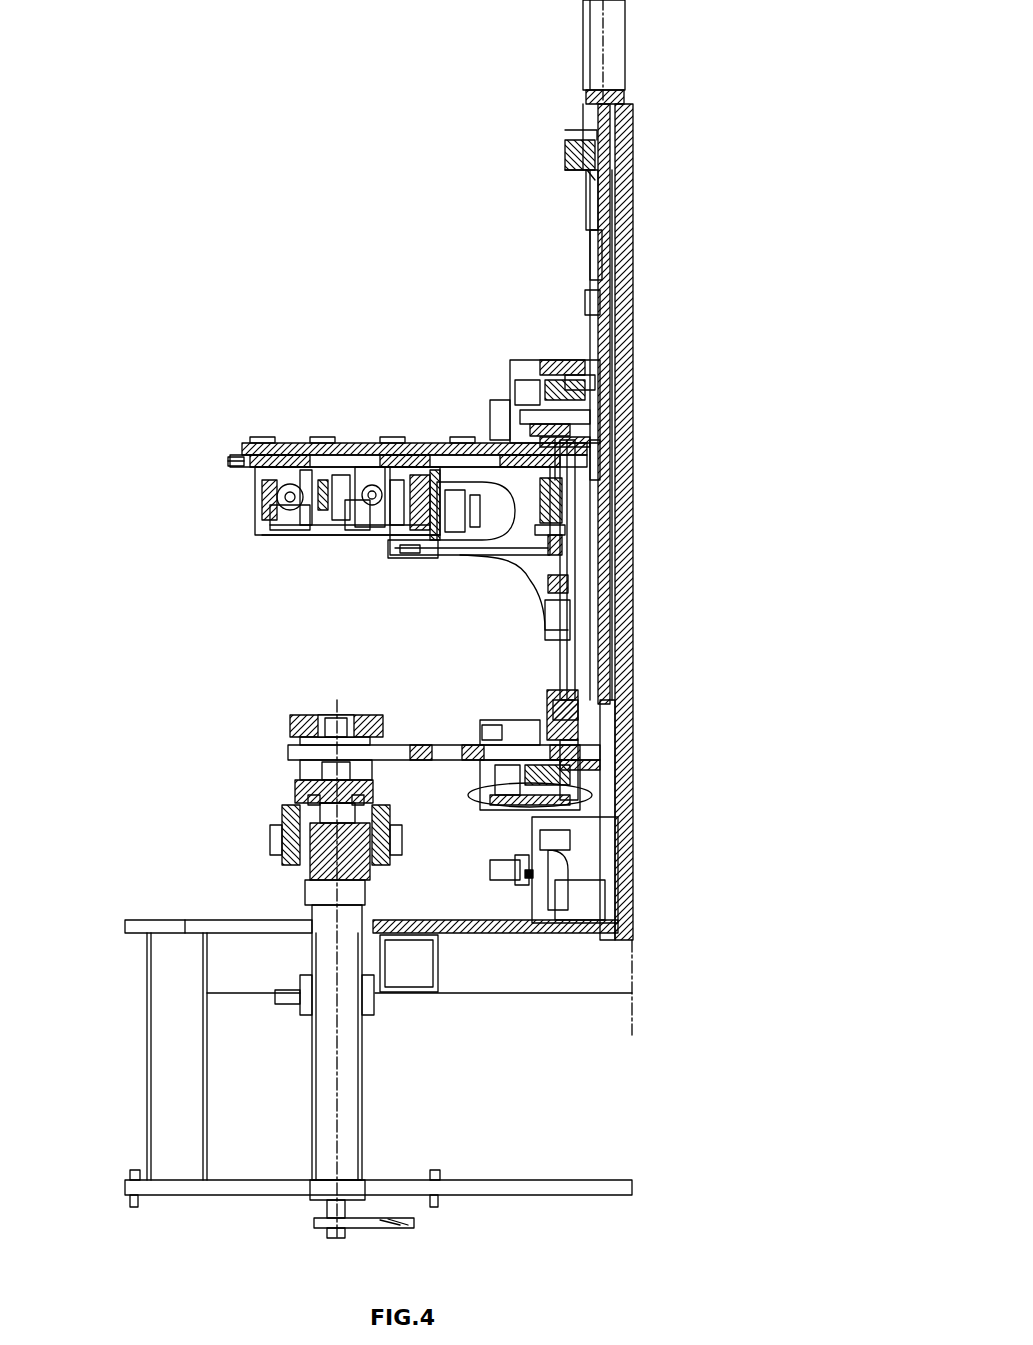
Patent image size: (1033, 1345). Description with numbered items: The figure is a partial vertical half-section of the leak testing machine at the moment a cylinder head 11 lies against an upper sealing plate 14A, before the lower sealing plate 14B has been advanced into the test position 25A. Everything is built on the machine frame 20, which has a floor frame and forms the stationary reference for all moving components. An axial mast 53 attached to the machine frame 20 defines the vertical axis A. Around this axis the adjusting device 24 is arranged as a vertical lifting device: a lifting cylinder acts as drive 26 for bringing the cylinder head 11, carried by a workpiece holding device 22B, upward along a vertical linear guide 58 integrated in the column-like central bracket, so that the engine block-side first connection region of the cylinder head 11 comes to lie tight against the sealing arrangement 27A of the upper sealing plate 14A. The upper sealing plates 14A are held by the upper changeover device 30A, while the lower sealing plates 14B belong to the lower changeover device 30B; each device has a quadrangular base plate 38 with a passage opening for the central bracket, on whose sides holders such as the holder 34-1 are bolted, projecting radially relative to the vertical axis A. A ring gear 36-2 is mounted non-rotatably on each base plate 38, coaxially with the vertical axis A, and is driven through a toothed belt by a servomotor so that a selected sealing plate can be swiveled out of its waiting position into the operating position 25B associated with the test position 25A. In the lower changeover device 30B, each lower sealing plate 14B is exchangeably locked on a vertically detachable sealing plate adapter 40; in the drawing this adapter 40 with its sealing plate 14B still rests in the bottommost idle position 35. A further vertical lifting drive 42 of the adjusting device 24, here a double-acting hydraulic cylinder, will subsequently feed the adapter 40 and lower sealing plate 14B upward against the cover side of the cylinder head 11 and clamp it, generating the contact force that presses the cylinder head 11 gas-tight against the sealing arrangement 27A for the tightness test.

The cylinder head 11 is at (262, 520).
The upper sealing plate 14A is at (228, 462).
The lower sealing plate 14B is at (292, 718).
The machine frame 20 is at (160, 1003).
The workpiece holding device 22B is at (412, 558).
The adjusting device 24 is at (757, 73).
The test position 25A is at (148, 465).
The operating position 25B is at (435, 362).
The drive 26 is at (618, 46).
The sealing arrangement 27A is at (365, 470).
The upper changeover device 30A is at (693, 410).
The lower changeover device 30B is at (717, 718).
The holder 34-1 is at (260, 445).
The idle position 35 is at (135, 690).
The ring gear 36-2 is at (502, 410).
The base plate 38 is at (560, 438).
The sealing plate adapter 40 is at (290, 737).
The vertical lifting drive 42 is at (355, 1090).
The axial mast 53 is at (618, 855).
The vertical linear guide 58 is at (624, 500).
The vertical axis A is at (632, 992).